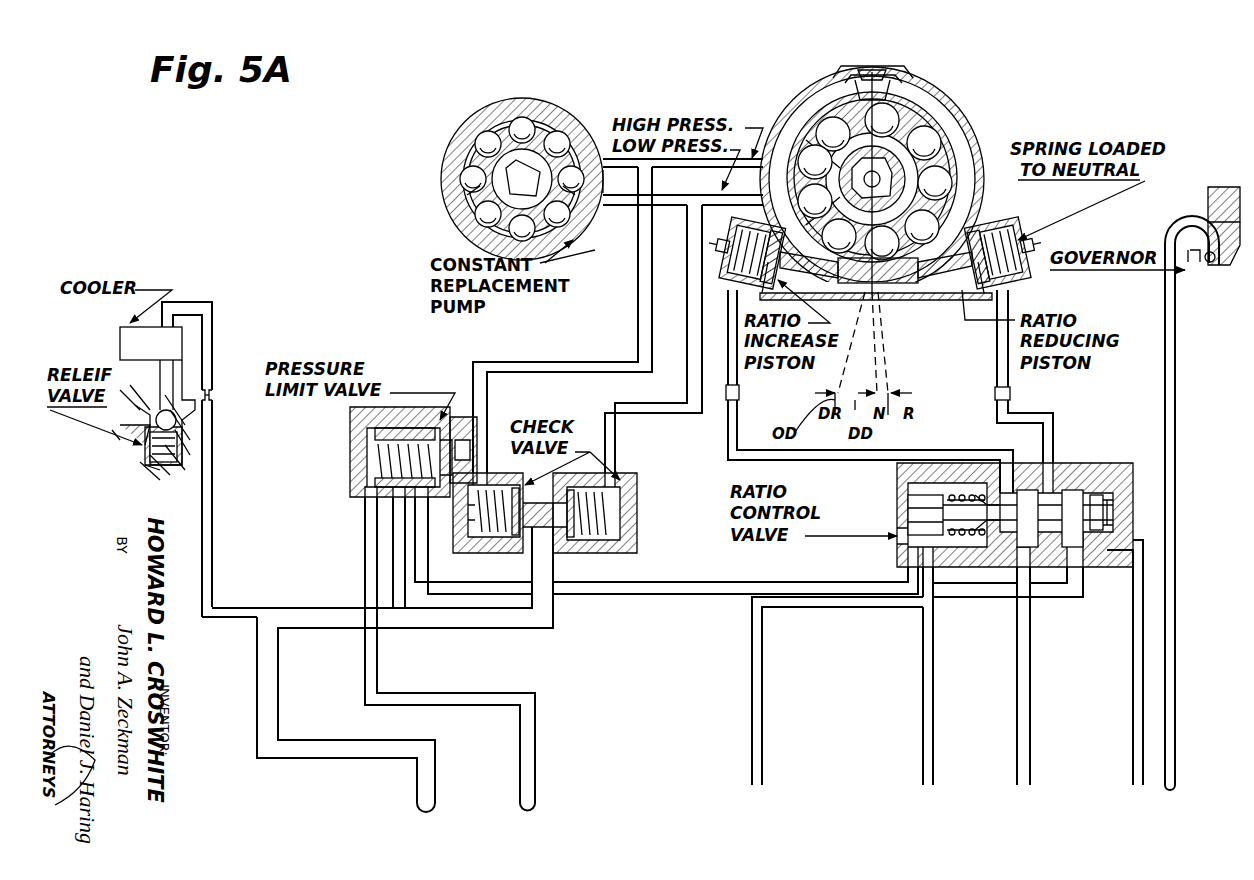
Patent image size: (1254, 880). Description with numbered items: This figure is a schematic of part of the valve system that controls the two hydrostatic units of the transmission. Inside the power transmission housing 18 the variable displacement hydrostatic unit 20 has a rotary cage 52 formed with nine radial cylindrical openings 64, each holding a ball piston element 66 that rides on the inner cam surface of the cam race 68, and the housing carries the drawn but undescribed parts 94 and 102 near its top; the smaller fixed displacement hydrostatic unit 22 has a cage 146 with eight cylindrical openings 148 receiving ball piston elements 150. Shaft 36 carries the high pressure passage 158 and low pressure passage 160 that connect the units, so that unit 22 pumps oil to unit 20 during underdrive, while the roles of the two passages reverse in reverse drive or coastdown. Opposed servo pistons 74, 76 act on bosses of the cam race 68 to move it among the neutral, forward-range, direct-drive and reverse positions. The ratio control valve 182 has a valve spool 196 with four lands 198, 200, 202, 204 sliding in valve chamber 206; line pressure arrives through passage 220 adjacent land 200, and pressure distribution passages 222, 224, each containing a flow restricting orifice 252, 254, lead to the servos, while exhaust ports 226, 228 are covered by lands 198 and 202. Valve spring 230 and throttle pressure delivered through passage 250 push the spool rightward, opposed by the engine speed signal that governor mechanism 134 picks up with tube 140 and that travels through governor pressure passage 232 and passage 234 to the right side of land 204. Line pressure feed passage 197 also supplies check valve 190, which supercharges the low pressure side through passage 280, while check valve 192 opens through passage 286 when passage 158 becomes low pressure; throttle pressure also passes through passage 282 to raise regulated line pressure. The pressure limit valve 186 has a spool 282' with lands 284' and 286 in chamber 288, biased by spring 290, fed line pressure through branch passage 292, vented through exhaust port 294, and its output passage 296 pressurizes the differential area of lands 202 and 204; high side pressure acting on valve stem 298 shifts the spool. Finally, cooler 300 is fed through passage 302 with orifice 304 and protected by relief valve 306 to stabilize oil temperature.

The power transmission housing 18 is at (945, 130).
The hydrostatic unit 20 is at (950, 110).
The hydrostatic unit 22 is at (548, 100).
The shaft 36 is at (470, 195).
The cage 52 is at (895, 150).
The radial cylindrical openings 64 is at (830, 118).
The ball piston element 66 is at (820, 130).
The cam race 68 is at (808, 150).
The piston 74 is at (745, 255).
The piston 76 is at (905, 300).
The housing neck 94 is at (885, 75).
The housing cap 102 is at (870, 70).
The governor mechanism 134 is at (1205, 200).
The speed sensing pressure pick-up tube 140 is at (1180, 220).
The cage 146 is at (515, 120).
The cylindrical openings 148 is at (485, 140).
The ball piston element 150 is at (529, 117).
The high pressure passage 158 is at (655, 170).
The low pressure passage 160 is at (607, 200).
The ratio control valve 182 is at (1068, 478).
The pressure limit valve 186 is at (468, 425).
The check valve 190 is at (622, 488).
The check valve 192 is at (478, 553).
The valve spool 196 is at (1055, 560).
The line pressure feed passage 197 is at (435, 780).
The valve land 198 is at (990, 560).
The valve land 200 is at (1030, 495).
The valve land 202 is at (1098, 495).
The valve land 204 is at (1115, 515).
The valve chamber 206 is at (975, 490).
The passage 220 is at (1030, 755).
The pressure distribution passage 222 is at (740, 413).
The pressure distribution passage 224 is at (1012, 300).
The exhaust port 226 is at (1020, 550).
The exhaust port 228 is at (1090, 592).
The valve spring 230 is at (970, 550).
The governor pressure passage 232 is at (1175, 780).
The passage 234 is at (1133, 778).
The passage 250 is at (933, 755).
The flow restricting orifice 252 is at (740, 392).
The flow restricting orifice 254 is at (1012, 392).
The passage 280 is at (670, 404).
The passage 282 is at (479, 654).
The valve spool 282' is at (382, 449).
The valve land 284' is at (366, 438).
The passage 286 is at (597, 366).
The valve chamber 288 is at (378, 482).
The spring 290 is at (380, 450).
The branch passage 292 is at (425, 550).
The exhaust port 294 is at (445, 490).
The output pressure passage 296 is at (683, 585).
The valve stem 298 is at (545, 470).
The cooler 300 is at (125, 340).
The passage 302 is at (212, 565).
The flow restricting orifice 304 is at (215, 405).
The relief valve 306 is at (140, 440).